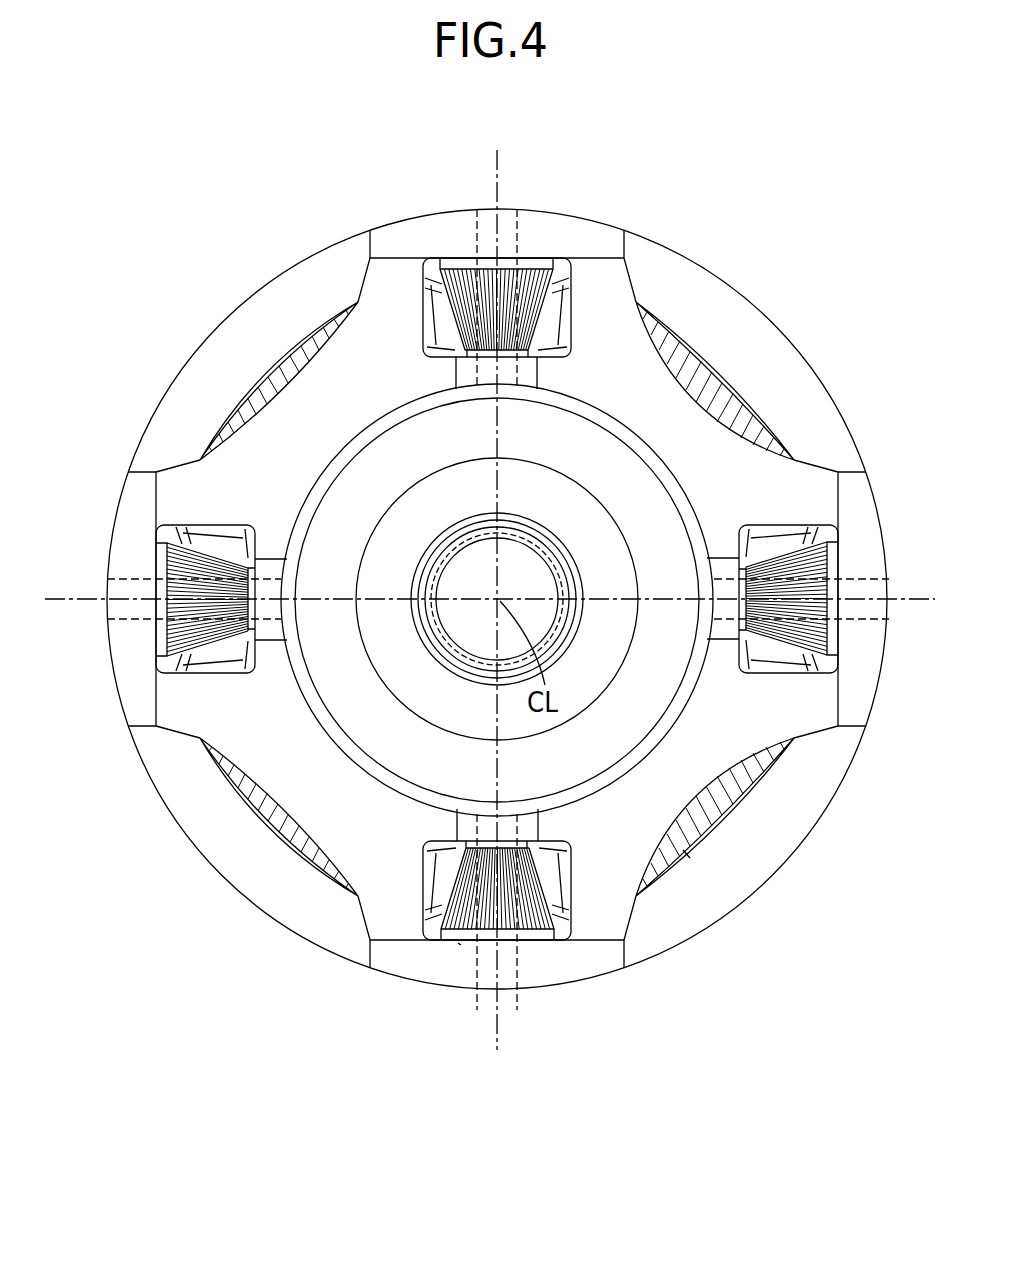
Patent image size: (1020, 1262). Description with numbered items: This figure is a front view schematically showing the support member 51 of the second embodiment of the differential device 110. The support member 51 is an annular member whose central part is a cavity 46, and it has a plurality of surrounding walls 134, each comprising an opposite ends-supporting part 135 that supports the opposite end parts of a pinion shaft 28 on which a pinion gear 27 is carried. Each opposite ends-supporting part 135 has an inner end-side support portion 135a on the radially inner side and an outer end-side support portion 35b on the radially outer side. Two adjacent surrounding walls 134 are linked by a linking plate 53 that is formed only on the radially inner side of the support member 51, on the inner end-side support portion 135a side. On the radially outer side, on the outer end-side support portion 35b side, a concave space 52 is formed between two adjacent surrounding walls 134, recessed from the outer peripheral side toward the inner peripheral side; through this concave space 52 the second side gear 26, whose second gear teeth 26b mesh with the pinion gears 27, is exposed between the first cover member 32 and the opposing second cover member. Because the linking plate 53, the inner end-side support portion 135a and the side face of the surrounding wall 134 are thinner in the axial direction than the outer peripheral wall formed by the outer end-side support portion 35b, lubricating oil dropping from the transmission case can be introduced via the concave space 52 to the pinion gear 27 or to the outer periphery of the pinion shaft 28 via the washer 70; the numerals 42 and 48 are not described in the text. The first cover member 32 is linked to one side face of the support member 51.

The differential device 110 is at (768, 305).
The support member 51 is at (883, 497).
The concave space 52 is at (737, 435).
The surrounding wall 134 is at (445, 250).
The second side gear 26 is at (770, 790).
The second gear teeth 26b is at (683, 850).
The first cover member 32 is at (762, 850).
The pinion gear 27 is at (538, 295).
The pinion shaft 28 is at (252, 622).
The cavity 46 is at (497, 614).
The linking plate 53 is at (643, 832).
The inner end-side support portion 135a is at (571, 830).
The outer end-side support portion 35b is at (561, 965).
The opposite ends-supporting part 135 is at (685, 1066).
The pinion shaft 42 is at (483, 978).
The shaft hole 48 is at (512, 832).
The washer 70 is at (461, 945).